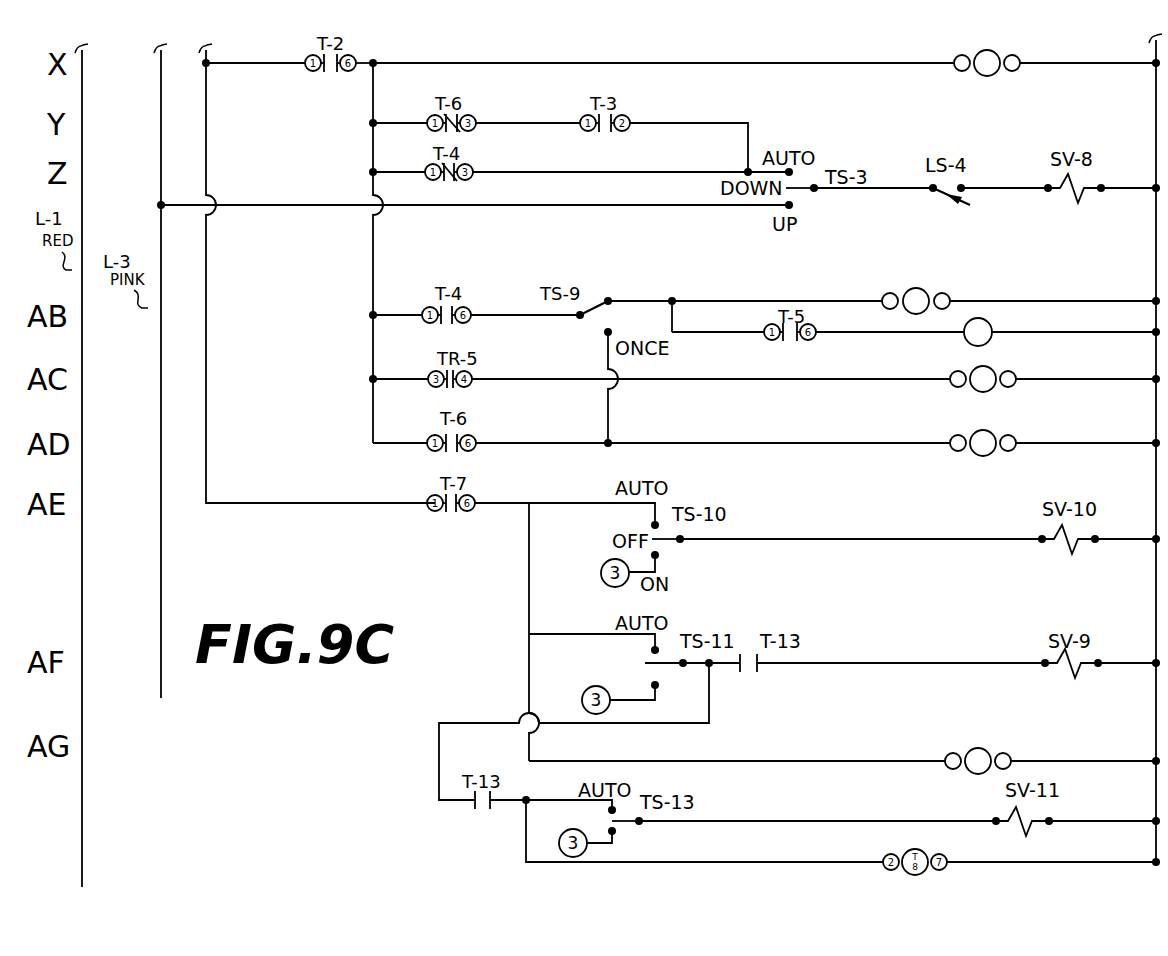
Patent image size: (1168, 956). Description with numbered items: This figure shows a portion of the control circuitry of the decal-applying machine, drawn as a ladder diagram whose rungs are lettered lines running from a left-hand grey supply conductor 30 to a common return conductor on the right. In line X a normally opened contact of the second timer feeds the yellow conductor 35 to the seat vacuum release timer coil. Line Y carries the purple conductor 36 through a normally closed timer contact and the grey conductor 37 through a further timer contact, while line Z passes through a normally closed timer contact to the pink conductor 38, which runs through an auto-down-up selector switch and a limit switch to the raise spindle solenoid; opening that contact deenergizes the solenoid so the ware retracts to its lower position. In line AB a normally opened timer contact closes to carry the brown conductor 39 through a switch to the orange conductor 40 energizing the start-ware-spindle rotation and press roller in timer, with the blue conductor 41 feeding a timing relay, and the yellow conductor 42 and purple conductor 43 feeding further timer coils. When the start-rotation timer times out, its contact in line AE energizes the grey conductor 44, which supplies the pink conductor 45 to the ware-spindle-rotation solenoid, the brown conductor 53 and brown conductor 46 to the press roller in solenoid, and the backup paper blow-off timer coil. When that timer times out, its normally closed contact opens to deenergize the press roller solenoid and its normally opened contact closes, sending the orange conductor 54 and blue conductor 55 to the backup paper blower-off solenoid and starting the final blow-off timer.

The grey supply wire 30 is at (206, 338).
The yellow wire 35 to coil T3 35 is at (766, 61).
The purple wire 36 is at (528, 117).
The grey wire 37 is at (689, 140).
The pink wire 38 to LS-4 and SV-8 38 is at (973, 194).
The brown wire 39 to switch TS-9 39 is at (527, 309).
The orange wire 40 to coil T5 40 is at (884, 298).
The blue wire 41 to timer relay TR5 41 is at (988, 329).
The yellow wire 42 to coil T6 42 is at (816, 376).
The purple wire 43 to coil T7 43 is at (818, 441).
The grey wire 44 to coil T13 44 is at (529, 594).
The pink wire 45 to solenoid valve SV-10 45 is at (906, 536).
The brown wire 46 to solenoid valve SV-9 46 is at (958, 662).
The brown wire 53 to switch TS-11 53 is at (594, 646).
The orange wire 54 through contact T-13 54 is at (503, 798).
The blue wire 55 to solenoid valve SV-11 55 is at (886, 819).